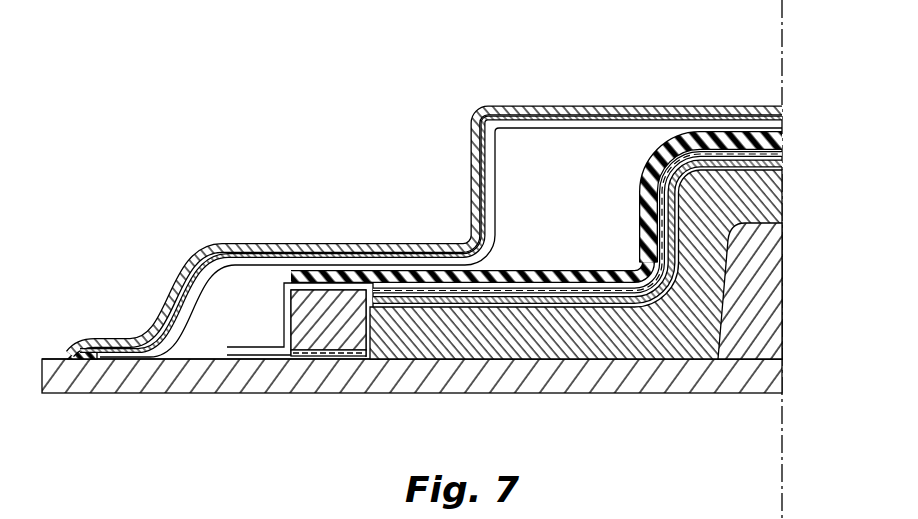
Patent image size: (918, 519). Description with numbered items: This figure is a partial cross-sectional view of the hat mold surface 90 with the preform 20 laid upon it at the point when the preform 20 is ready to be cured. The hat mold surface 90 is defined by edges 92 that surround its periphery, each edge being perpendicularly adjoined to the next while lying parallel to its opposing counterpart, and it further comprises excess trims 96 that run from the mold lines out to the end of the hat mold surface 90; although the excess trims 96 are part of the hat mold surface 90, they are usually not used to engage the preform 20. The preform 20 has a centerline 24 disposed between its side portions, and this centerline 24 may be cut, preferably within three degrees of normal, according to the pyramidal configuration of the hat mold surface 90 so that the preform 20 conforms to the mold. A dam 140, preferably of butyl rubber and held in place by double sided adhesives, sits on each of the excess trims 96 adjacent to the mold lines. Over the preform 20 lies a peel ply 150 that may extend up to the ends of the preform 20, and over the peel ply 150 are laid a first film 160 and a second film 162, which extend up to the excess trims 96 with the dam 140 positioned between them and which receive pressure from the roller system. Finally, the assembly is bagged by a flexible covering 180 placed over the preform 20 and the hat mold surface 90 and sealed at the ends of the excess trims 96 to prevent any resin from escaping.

The preform 20 is at (650, 336).
The centerline 24 is at (772, 197).
The hat mold surface 90 is at (803, 296).
The edges 92 is at (55, 386).
The excess trims 96 is at (192, 384).
The dam 140 is at (324, 330).
The peel ply 150 is at (563, 313).
The first film 160 is at (441, 276).
The second film 162 is at (376, 276).
The flexible covering 180 is at (519, 106).